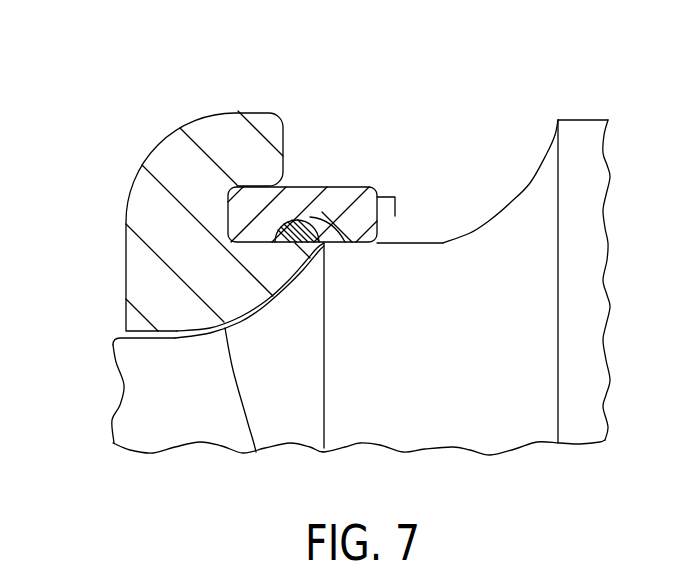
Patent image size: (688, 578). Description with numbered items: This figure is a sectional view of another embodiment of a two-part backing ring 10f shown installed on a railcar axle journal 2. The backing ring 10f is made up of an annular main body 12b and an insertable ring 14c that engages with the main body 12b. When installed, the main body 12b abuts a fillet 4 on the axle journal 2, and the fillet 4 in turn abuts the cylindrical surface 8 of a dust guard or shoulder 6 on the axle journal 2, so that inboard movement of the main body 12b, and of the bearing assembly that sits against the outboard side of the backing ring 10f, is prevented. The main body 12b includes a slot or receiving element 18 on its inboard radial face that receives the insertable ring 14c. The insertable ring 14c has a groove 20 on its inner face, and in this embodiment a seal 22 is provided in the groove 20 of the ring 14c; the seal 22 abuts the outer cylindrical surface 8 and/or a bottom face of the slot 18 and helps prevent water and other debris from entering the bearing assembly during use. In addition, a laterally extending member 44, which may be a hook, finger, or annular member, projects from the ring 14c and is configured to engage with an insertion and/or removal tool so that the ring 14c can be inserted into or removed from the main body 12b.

The two-part backing ring 10f is at (70, 78).
The main body 12b is at (170, 163).
The insertable ring 14c is at (290, 200).
The laterally extending member 44 is at (383, 198).
The cylindrical surface 8 is at (422, 242).
The slot 18 is at (228, 243).
The groove 20 is at (350, 244).
The seal 22 is at (325, 255).
The dust guard 6 is at (533, 338).
The railcar axle journal 2 is at (143, 398).
The fillet 4 is at (256, 452).